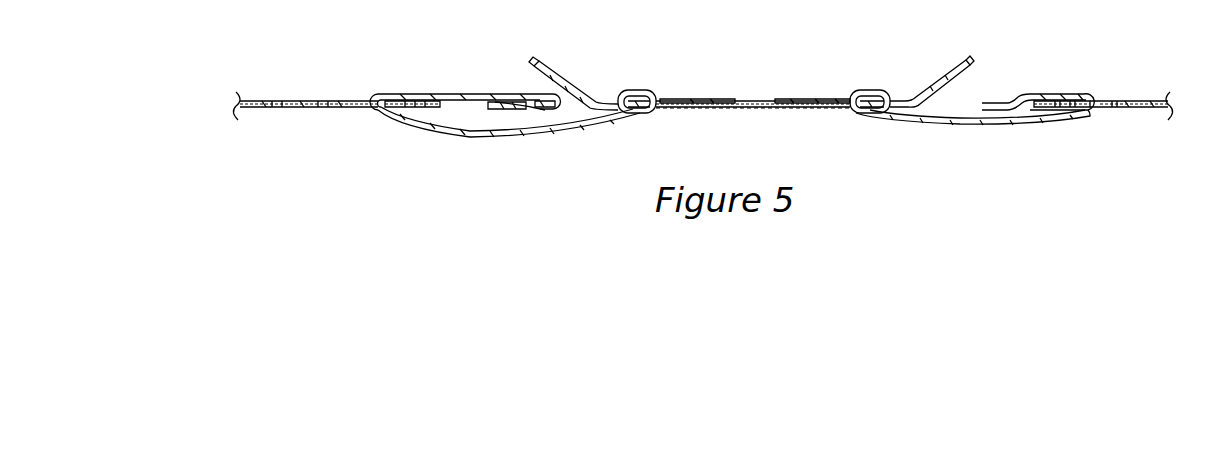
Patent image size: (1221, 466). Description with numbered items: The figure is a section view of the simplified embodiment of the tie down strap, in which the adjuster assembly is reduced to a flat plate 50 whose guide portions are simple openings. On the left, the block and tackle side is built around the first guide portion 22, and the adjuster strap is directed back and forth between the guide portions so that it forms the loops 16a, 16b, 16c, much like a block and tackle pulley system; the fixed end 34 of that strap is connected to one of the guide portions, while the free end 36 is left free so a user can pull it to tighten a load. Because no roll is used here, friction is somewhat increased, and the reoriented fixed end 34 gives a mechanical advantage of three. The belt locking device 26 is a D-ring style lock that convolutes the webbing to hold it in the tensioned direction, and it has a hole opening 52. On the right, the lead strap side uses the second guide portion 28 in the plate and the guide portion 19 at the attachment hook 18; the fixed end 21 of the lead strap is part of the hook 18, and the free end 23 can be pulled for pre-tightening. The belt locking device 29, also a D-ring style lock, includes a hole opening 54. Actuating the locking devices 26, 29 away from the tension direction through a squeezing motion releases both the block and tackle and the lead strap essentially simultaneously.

The attachment hook 18 is at (1138, 104).
The second guide portion 19 is at (1105, 100).
The fixed end 21 is at (1019, 99).
The first guide portion 22 is at (373, 100).
The free end 23 is at (950, 82).
The belt locking device 26 is at (644, 98).
The second guide portion 28 is at (837, 107).
The belt locking device 29 is at (867, 100).
The fixed end 34 is at (518, 110).
The free end 36 is at (562, 82).
The flat plate 50 is at (750, 104).
The hole opening 52 is at (694, 101).
The hole opening 54 is at (806, 101).
The loop 16a is at (547, 72).
The loop 16b is at (434, 131).
The loop 16c is at (472, 97).